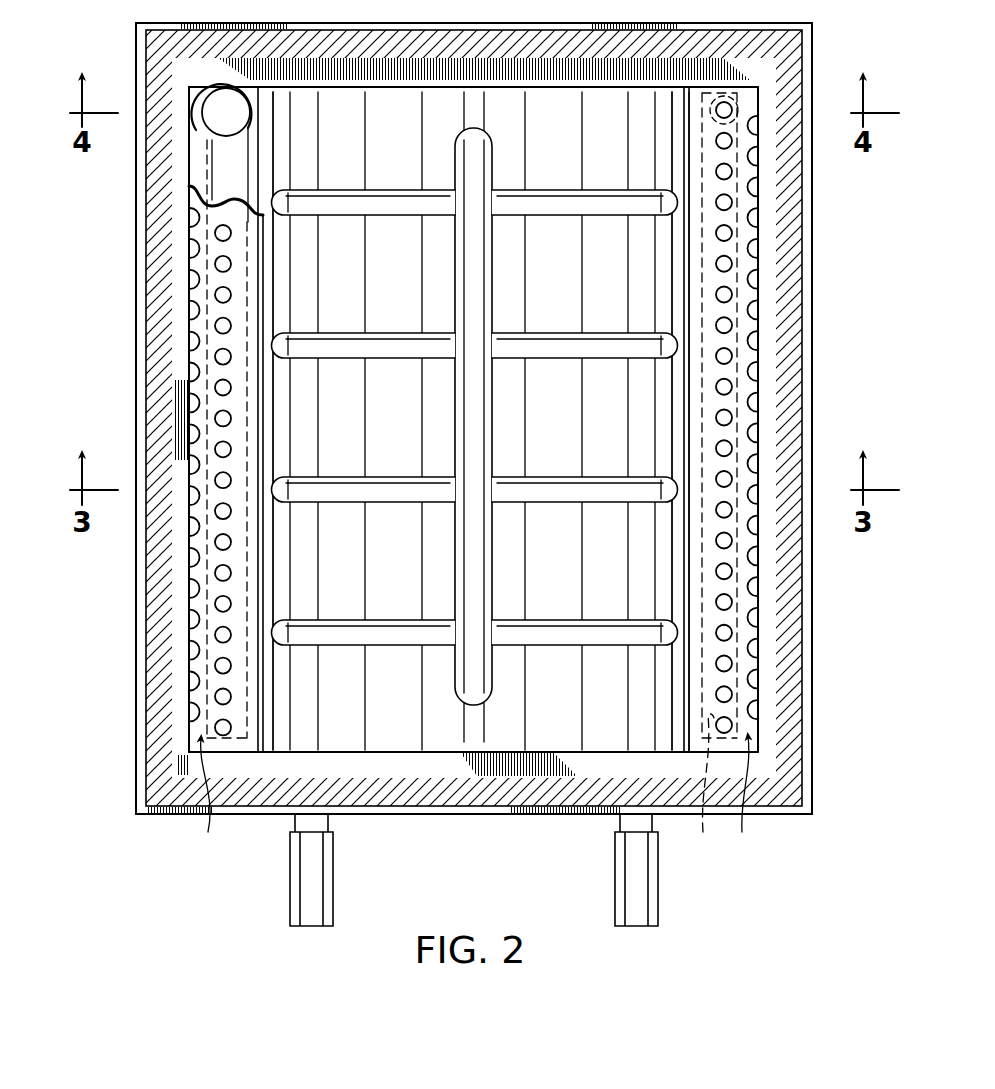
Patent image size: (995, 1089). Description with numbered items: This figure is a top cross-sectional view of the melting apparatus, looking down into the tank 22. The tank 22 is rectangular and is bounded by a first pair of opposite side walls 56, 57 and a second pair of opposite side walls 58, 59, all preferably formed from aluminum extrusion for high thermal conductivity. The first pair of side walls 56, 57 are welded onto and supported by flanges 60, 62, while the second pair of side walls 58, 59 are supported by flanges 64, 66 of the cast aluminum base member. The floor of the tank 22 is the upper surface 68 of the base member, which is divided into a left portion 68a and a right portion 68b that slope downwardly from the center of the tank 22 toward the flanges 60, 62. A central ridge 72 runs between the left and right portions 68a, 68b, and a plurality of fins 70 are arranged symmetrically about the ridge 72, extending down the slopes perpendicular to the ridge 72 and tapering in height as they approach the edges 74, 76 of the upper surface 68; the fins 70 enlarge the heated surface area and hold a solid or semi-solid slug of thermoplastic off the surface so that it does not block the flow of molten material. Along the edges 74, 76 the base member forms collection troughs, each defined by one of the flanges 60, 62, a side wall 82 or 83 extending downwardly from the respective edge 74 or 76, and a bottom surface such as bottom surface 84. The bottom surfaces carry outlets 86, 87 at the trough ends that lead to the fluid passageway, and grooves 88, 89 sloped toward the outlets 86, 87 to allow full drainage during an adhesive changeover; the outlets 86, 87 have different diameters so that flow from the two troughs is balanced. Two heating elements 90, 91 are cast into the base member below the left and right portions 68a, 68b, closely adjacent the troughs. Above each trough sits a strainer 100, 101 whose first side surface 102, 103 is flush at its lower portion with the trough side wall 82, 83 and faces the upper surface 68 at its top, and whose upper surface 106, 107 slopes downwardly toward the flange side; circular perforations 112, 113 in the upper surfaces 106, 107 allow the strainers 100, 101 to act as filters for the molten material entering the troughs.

The tank 22 is at (60, 260).
The side wall 56 is at (150, 305).
The side wall 57 is at (790, 258).
The side wall 58 is at (553, 45).
The side wall 59 is at (393, 795).
The flange 60 is at (185, 231).
The flange 62 is at (770, 592).
The flange 64 is at (389, 74).
The flange 66 is at (393, 762).
The upper surface 68 is at (545, 726).
The left portion 68a is at (418, 540).
The right portion 68b is at (578, 600).
The fins 70 is at (388, 346).
The central ridge 72 is at (470, 263).
The edge 74 is at (270, 585).
The edge 76 is at (680, 180).
The side wall 82 is at (262, 410).
The side wall 83 is at (685, 352).
The bottom surface 84 is at (205, 173).
The outlet 86 is at (233, 110).
The outlet 87 is at (717, 114).
The groove 88 is at (200, 172).
The groove 89 is at (705, 792).
The heating element 90 is at (291, 876).
The heating element 91 is at (617, 876).
The strainer 100 is at (200, 804).
The strainer 101 is at (742, 803).
The first side surface 102 is at (262, 268).
The first side surface 103 is at (690, 263).
The upper surface 106 is at (240, 366).
The upper surface 107 is at (708, 316).
The perforations 112 is at (222, 666).
The perforations 113 is at (726, 695).